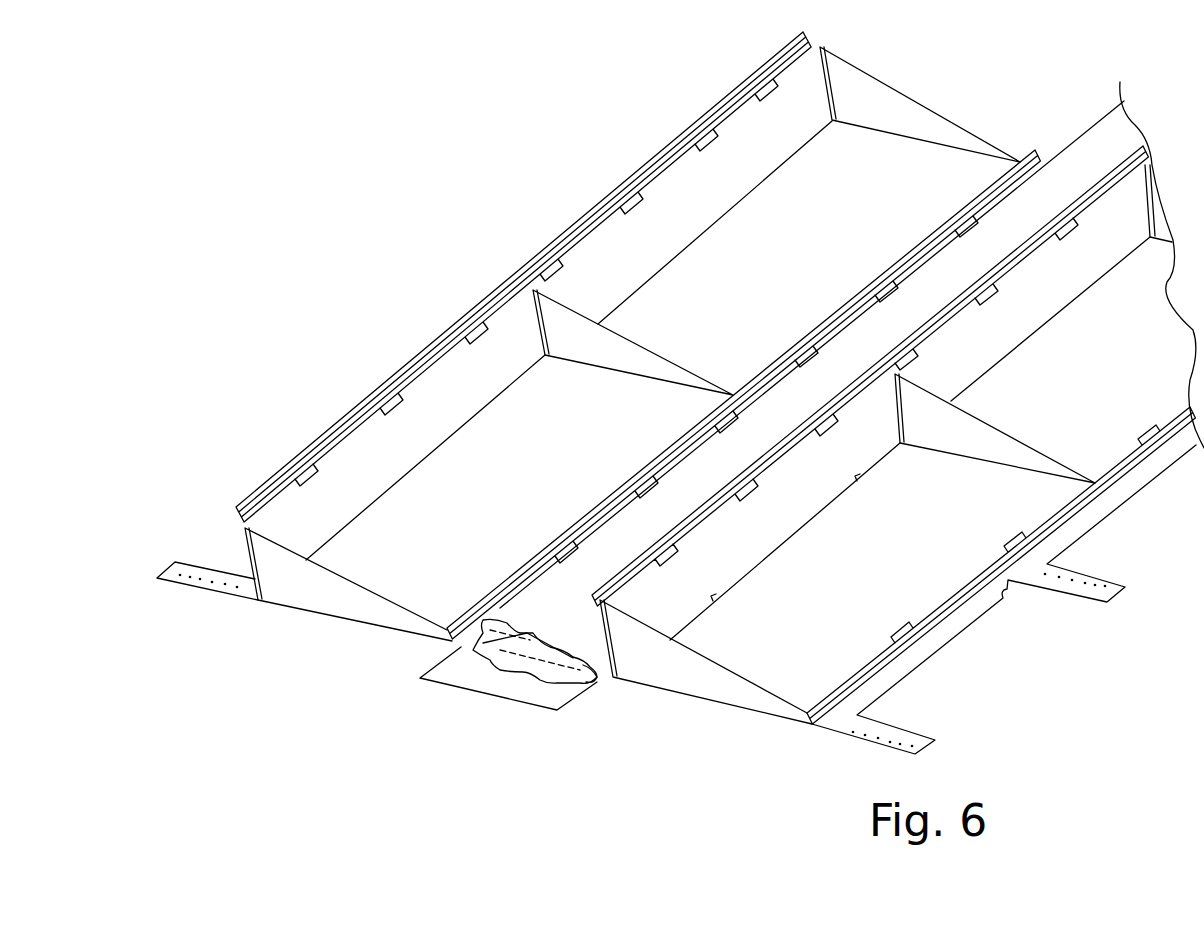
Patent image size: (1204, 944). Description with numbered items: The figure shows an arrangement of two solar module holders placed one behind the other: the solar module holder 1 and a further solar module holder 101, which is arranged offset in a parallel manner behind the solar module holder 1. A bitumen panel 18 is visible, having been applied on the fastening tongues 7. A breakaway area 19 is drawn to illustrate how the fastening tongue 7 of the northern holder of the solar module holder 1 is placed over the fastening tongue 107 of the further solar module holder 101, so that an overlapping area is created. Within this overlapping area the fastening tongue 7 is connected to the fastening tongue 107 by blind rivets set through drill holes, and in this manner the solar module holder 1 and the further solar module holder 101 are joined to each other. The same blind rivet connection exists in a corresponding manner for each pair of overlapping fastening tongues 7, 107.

The solar module holder 1 is at (657, 750).
The further solar module holder 101 is at (310, 658).
The fastening tongue 107 is at (510, 687).
The bitumen panel 18 is at (508, 660).
The breakaway area 19 is at (533, 672).
The fastening tongue 7 is at (590, 677).